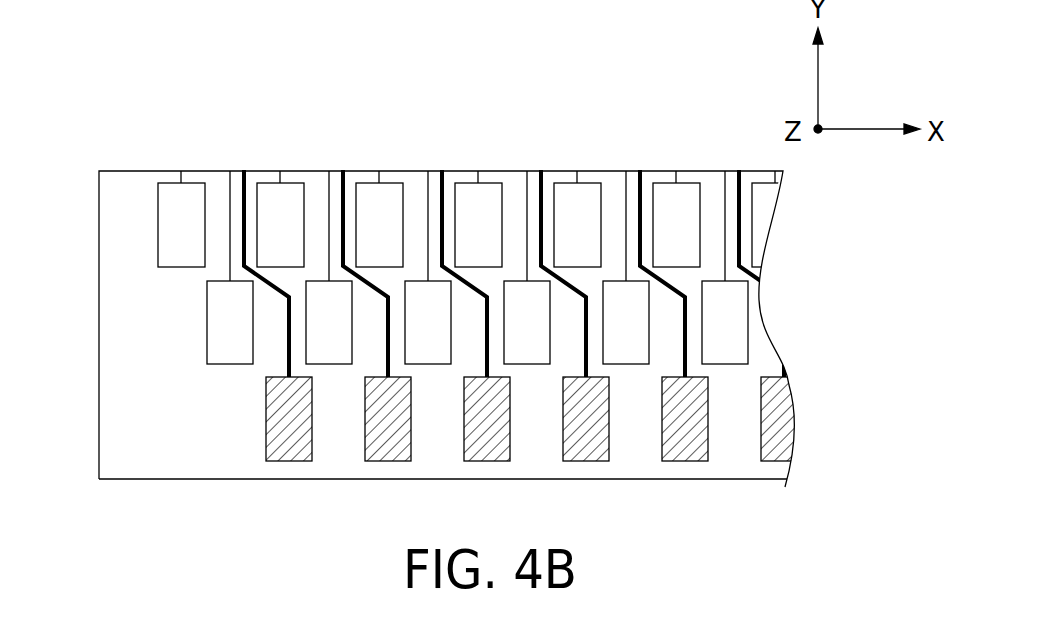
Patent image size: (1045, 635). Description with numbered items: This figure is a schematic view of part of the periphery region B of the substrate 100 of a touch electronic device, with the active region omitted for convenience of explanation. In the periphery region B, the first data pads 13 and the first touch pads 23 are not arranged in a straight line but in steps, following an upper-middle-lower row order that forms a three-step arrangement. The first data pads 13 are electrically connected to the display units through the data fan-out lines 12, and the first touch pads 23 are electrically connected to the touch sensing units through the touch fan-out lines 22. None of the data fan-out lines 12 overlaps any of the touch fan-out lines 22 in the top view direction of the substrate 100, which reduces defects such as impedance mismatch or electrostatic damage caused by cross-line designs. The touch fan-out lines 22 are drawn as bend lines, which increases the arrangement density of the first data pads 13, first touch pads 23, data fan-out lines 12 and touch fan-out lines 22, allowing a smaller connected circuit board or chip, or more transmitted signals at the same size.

The data fan-out lines 12 is at (181, 182).
The touch fan-out lines 22 is at (244, 178).
The first data pads 13 is at (233, 343).
The first touch pads 23 is at (289, 455).
The substrate 100 is at (733, 480).
The periphery region B is at (120, 358).